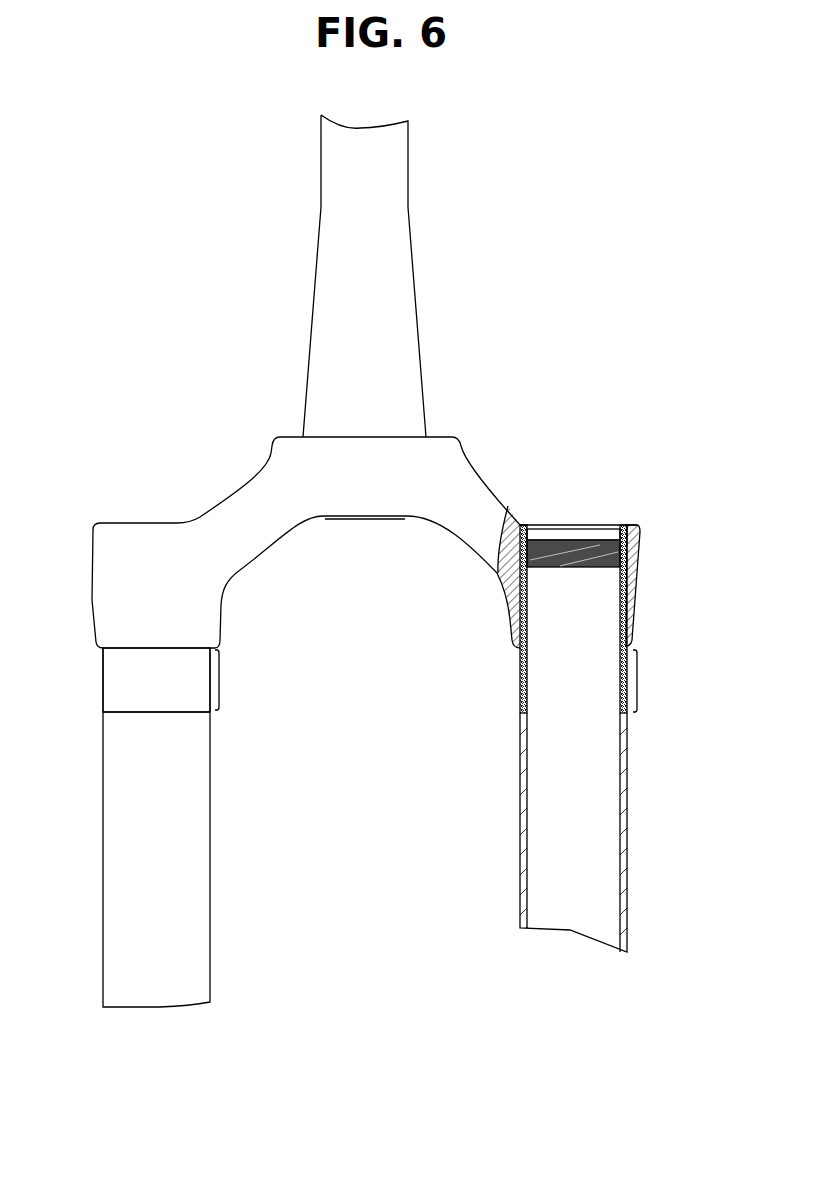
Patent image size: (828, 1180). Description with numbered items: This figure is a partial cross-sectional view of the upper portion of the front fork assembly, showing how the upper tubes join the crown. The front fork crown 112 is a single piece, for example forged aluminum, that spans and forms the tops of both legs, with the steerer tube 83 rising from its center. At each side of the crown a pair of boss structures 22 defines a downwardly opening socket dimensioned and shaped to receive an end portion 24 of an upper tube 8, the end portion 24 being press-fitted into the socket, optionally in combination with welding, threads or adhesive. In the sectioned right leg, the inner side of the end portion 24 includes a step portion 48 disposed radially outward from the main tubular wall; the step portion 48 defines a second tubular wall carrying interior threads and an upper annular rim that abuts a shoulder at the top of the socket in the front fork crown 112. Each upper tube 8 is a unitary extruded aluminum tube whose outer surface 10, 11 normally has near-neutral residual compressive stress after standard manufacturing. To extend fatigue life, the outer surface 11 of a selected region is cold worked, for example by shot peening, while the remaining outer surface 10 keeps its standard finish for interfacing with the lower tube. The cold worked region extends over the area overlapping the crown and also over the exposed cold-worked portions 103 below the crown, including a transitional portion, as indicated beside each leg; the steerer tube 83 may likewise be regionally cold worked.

The steerer tube 83 is at (413, 312).
The front fork crown 112 is at (447, 465).
The boss structures 22 is at (103, 568).
The step portion 48 is at (570, 538).
The end portion 24 is at (622, 597).
The upper tube 8 is at (210, 848).
The outer surface 11 is at (169, 695).
The outer surface 10 is at (170, 789).
The exposed cold-worked portions 103 is at (219, 680).